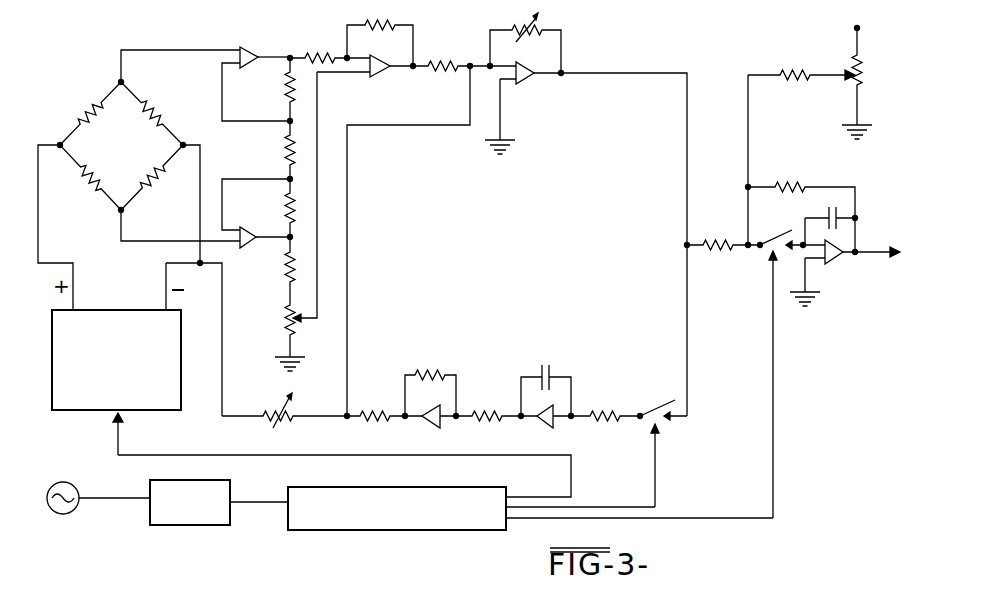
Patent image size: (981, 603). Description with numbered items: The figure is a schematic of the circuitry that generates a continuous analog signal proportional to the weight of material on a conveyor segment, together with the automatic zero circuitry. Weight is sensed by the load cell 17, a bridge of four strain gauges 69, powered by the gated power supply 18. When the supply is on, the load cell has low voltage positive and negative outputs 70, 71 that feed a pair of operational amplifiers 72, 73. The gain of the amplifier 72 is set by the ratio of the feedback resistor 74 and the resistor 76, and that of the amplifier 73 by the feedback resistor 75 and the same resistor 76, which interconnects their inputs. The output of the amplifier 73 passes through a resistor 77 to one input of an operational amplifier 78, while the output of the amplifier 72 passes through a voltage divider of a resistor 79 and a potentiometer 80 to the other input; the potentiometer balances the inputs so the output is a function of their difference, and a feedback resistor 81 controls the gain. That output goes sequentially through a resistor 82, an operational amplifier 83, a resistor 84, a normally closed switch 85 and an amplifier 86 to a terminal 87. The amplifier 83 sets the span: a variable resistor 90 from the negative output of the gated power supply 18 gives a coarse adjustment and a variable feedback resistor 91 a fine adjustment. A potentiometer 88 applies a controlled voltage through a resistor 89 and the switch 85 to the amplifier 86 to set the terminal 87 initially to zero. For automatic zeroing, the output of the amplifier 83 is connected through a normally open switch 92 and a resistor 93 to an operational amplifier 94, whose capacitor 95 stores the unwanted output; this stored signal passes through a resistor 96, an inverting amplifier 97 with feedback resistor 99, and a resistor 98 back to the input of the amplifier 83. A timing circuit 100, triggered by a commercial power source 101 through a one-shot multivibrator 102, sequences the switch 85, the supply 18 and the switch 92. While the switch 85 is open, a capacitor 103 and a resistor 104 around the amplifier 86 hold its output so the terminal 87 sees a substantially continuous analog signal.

The load cell 17 is at (112, 191).
The gated power supply 18 is at (68, 412).
The strain gauges 69 is at (94, 103).
The positive output 70 is at (151, 245).
The negative output 71 is at (177, 33).
The operational amplifier 72 is at (244, 250).
The operational amplifier 73 is at (252, 48).
The feedback resistor 74 is at (288, 208).
The feedback resistor 75 is at (286, 99).
The resistor 76 is at (288, 152).
The resistor 77 is at (316, 42).
The operational amplifier 78 is at (378, 76).
The resistor 79 is at (286, 274).
The potentiometer 80 is at (283, 315).
The feedback resistor 81 is at (385, 27).
The resistor 82 is at (455, 52).
The operational amplifier 83 is at (522, 84).
The resistor 84 is at (727, 242).
The normally closed switch 85 is at (786, 240).
The amplifier 86 is at (828, 273).
The terminal 87 is at (872, 259).
The potentiometer 88 is at (865, 75).
The resistor 89 is at (787, 72).
The variable resistor 90 is at (270, 402).
The variable feedback resistor 91 is at (546, 22).
The normally open switch 92 is at (664, 404).
The resistor 93 is at (610, 412).
The operational amplifier 94 is at (539, 429).
The capacitor 95 is at (539, 370).
The resistor 96 is at (498, 406).
The inverting amplifier 97 is at (426, 429).
The resistor 98 is at (384, 404).
The feedback resistor 99 is at (429, 374).
The timing circuit 100 is at (290, 486).
The commercial power source 101 is at (62, 517).
The one-shot multivibrator 102 is at (200, 525).
The capacitor 103 is at (827, 208).
The resistor 104 is at (800, 184).